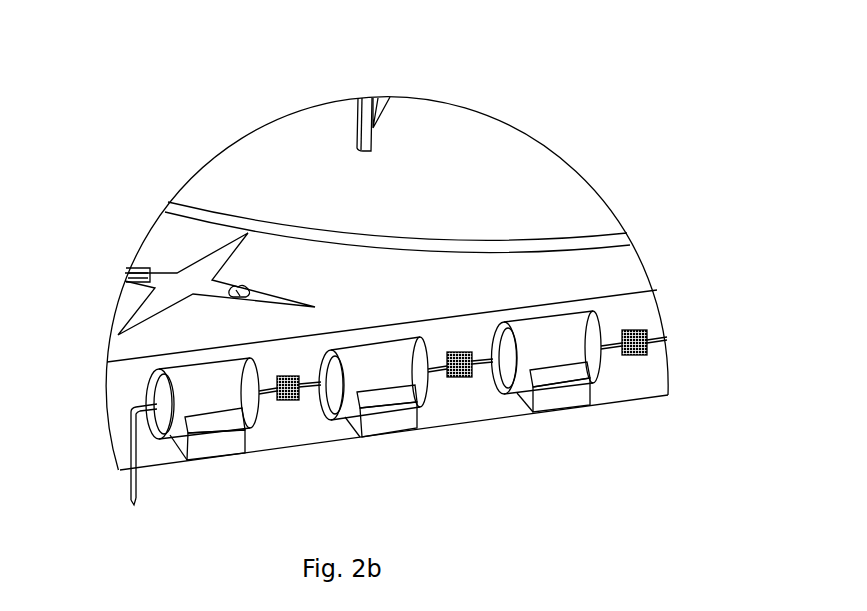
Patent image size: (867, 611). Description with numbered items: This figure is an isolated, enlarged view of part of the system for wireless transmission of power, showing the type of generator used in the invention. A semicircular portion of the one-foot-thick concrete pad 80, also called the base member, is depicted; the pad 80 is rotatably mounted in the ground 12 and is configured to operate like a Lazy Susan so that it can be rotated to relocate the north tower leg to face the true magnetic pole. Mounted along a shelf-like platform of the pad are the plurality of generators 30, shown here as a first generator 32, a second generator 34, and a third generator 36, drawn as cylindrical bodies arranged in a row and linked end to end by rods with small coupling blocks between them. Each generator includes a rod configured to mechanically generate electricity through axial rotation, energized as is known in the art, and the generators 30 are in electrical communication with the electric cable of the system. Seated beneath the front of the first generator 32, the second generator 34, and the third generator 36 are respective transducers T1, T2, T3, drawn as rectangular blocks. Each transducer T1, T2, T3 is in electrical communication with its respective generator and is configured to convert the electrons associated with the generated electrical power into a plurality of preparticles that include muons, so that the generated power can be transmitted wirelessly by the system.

The concrete pad 80 is at (265, 152).
The generators 30 is at (410, 294).
The ground 12 is at (630, 268).
The first generator 32 is at (185, 381).
The second generator 34 is at (345, 440).
The third generator 36 is at (577, 323).
The first transducer T1 is at (200, 450).
The second transducer T2 is at (387, 428).
The third transducer T3 is at (565, 403).